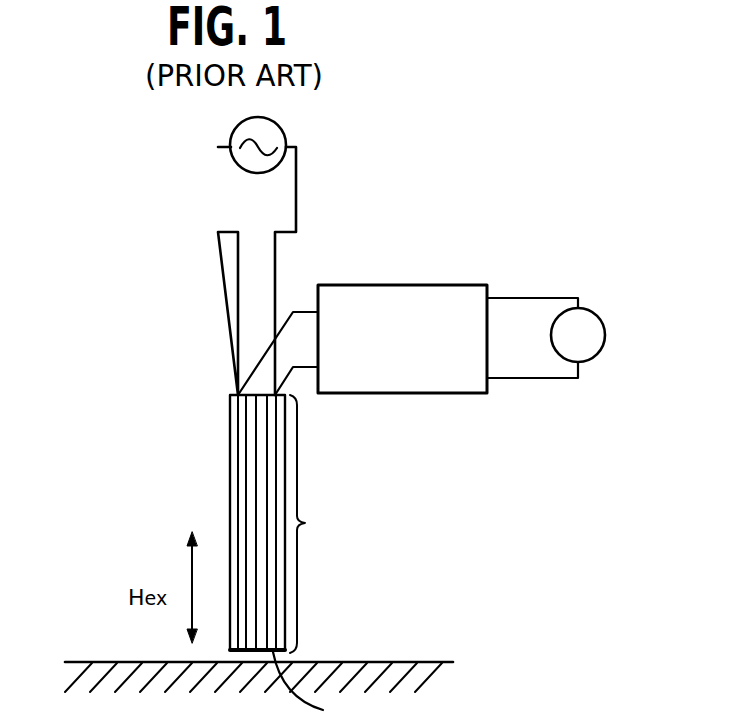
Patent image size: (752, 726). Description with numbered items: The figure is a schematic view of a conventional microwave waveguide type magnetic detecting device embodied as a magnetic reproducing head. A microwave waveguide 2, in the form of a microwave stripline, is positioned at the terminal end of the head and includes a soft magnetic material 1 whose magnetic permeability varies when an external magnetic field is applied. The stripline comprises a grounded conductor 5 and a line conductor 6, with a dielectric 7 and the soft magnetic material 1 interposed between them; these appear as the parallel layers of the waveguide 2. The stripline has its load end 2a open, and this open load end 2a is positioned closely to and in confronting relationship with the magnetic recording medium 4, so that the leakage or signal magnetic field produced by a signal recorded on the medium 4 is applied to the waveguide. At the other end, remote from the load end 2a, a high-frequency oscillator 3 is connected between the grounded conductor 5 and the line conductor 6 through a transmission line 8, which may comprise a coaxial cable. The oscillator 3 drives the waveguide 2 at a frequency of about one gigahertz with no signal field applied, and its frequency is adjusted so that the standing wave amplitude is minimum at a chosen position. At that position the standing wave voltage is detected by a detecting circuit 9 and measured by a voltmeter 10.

The soft magnetic material 1 is at (250, 453).
The microwave waveguide 2 is at (260, 519).
The load end 2a is at (315, 688).
The high-frequency oscillator 3 is at (284, 131).
The magnetic recording medium 4 is at (427, 662).
The grounded conductor 5 is at (273, 598).
The line conductor 6 is at (238, 411).
The dielectric 7 is at (262, 446).
The transmission line 8 is at (238, 263).
The detecting circuit 9 is at (420, 285).
The voltmeter 10 is at (602, 318).